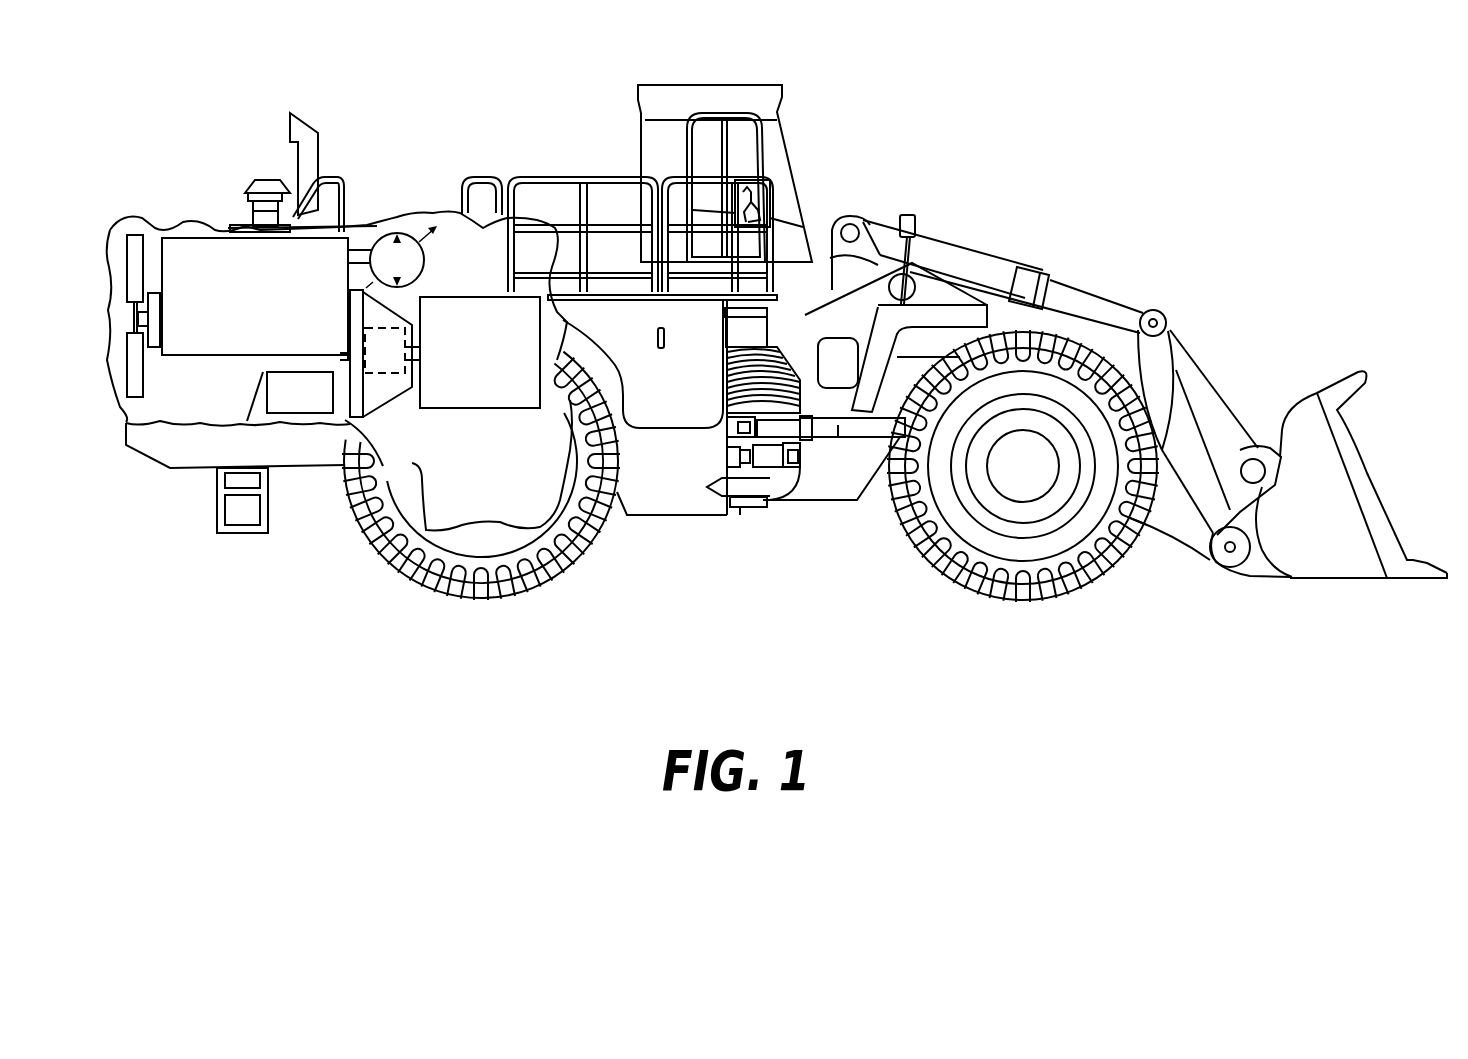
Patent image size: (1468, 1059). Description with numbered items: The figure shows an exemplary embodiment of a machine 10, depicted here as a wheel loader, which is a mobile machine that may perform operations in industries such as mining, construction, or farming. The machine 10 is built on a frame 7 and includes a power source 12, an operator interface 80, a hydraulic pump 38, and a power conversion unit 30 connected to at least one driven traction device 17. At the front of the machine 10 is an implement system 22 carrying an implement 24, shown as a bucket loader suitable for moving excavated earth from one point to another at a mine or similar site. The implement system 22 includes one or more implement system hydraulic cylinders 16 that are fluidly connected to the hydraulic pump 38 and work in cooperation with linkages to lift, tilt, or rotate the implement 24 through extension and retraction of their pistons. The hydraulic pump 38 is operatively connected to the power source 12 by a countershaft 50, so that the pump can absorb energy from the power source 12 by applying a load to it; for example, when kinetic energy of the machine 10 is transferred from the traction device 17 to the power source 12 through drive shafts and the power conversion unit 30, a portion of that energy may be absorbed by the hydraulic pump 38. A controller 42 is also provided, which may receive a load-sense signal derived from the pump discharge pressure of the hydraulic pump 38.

The machine 10 is at (368, 697).
The power source 12 is at (257, 335).
The implement system hydraulic cylinder 16 is at (971, 251).
The driven traction device 17 is at (329, 542).
The implement system 22 is at (1229, 266).
The implement 24 is at (1323, 579).
The power conversion unit 30 is at (395, 403).
The hydraulic pump 38 is at (410, 273).
The controller 42 is at (275, 452).
The countershaft 50 is at (392, 196).
The frame 7 is at (595, 431).
The operator interface 80 is at (764, 187).